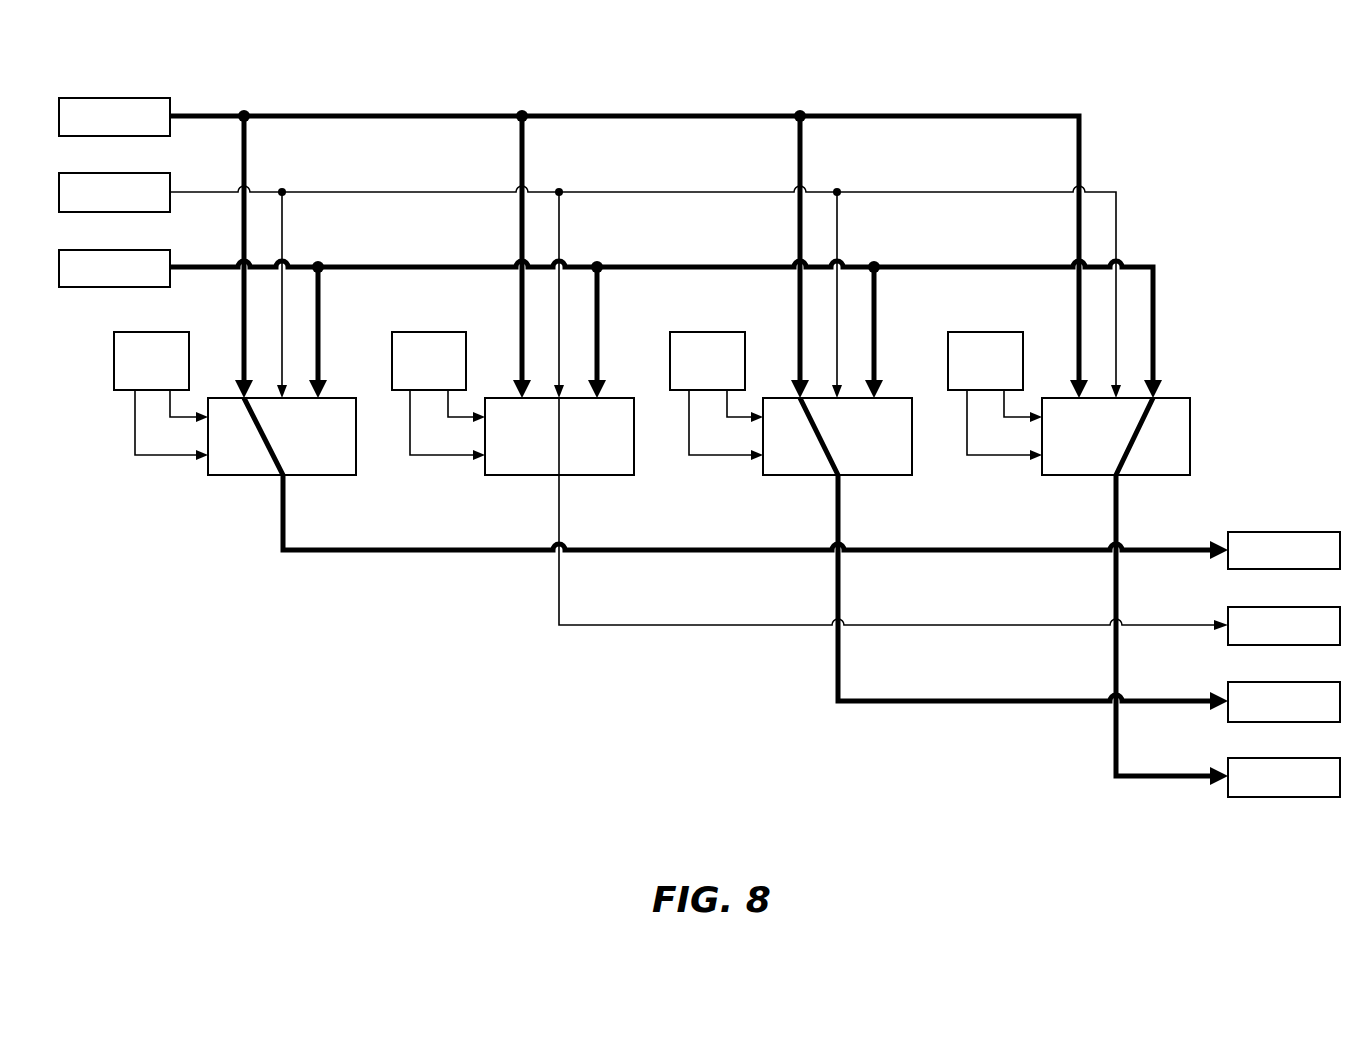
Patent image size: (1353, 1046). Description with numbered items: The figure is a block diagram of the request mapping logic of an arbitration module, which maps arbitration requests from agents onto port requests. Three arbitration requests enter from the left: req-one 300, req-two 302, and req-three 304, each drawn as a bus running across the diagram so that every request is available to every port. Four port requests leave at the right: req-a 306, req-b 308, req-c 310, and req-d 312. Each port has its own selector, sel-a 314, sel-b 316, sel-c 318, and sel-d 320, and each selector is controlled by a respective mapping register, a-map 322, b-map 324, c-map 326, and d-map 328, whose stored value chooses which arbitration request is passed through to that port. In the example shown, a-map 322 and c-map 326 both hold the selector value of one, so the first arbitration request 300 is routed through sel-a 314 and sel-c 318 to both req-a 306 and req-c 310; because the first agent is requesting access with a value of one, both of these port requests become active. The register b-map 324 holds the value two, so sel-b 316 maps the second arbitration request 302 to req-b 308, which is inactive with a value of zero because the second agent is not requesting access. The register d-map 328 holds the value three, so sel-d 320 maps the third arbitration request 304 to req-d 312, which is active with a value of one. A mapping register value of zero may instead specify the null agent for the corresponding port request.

The arbitration request req-1 300 is at (78, 98).
The arbitration request req-2 302 is at (78, 173).
The arbitration request req-3 304 is at (78, 250).
The port request req-a 306 is at (1247, 532).
The port request req-b 308 is at (1247, 607).
The port request req-c 310 is at (1247, 682).
The port request req-d 312 is at (1247, 758).
The selector sel-a 314 is at (318, 475).
The selector sel-b 316 is at (597, 475).
The selector sel-c 318 is at (873, 475).
The selector sel-d 320 is at (1153, 475).
The mapping register a-map 322 is at (150, 332).
The mapping register b-map 324 is at (430, 332).
The mapping register c-map 326 is at (707, 332).
The mapping register d-map 328 is at (985, 332).